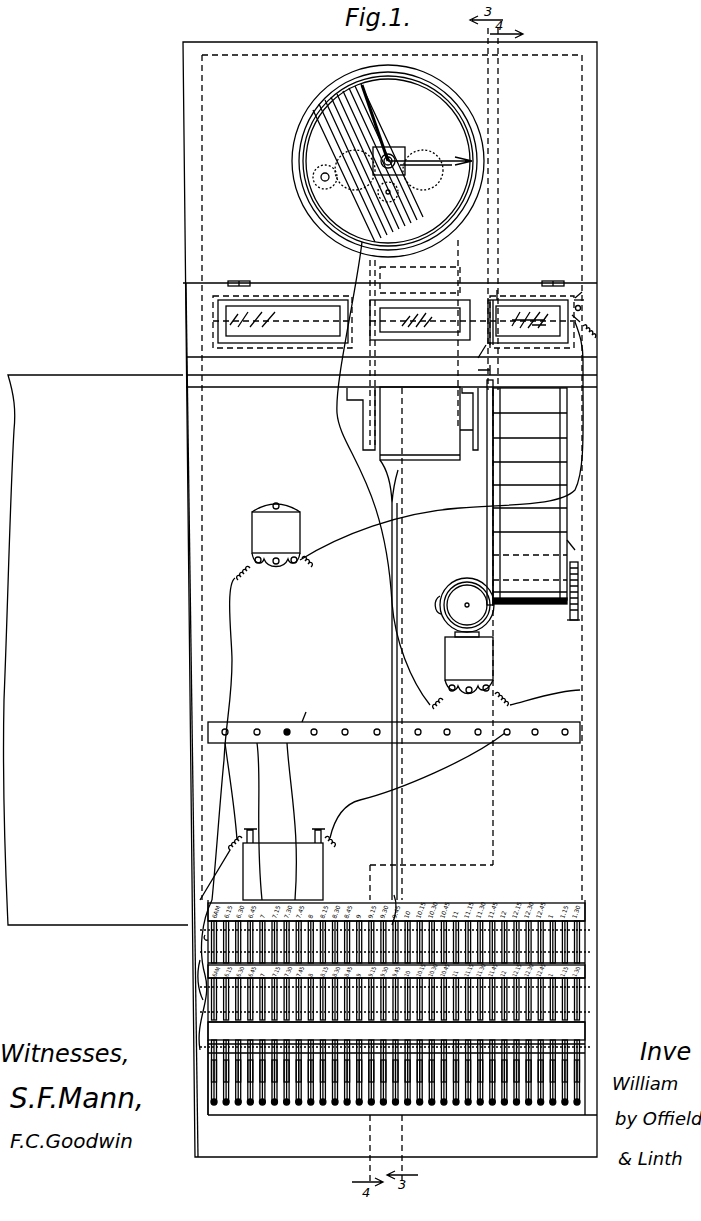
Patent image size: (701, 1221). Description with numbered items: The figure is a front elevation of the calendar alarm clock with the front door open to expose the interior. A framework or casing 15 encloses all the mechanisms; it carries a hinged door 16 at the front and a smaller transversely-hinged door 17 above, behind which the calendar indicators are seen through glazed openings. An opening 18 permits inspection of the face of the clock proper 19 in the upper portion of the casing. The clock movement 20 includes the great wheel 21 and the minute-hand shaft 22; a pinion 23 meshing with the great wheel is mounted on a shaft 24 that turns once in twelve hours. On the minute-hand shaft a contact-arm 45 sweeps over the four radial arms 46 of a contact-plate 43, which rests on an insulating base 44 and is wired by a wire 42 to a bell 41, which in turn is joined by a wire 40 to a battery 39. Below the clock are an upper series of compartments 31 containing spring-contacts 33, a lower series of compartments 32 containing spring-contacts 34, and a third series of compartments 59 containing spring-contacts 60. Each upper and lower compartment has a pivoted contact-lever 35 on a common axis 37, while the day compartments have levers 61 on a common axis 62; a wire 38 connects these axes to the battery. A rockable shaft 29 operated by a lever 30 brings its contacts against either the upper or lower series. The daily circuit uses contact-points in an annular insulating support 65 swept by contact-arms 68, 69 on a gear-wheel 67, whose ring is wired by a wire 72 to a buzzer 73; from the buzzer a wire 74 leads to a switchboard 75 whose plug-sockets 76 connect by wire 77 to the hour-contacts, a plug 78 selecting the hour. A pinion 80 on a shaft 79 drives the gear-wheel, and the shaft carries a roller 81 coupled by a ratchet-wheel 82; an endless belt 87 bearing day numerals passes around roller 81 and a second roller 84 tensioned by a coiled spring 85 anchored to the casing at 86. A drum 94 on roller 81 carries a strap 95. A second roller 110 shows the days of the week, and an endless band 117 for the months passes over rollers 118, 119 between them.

The framework or casing 15 is at (205, 500).
The hinged door 16 is at (95, 650).
The transversely-hinged door 17 is at (597, 312).
The opening 18 is at (457, 138).
The clock proper 19 is at (415, 97).
The clock movement or train 20 is at (390, 199).
The great wheel 21 is at (368, 163).
The minute-hand shaft 22 is at (393, 123).
The pinion 23 is at (321, 178).
The shaft or arbor 24 is at (325, 188).
The shaft or axis 29 is at (592, 952).
The handle or lever 30 is at (404, 899).
The upper series of compartments 31 is at (588, 932).
The lower series of compartments 32 is at (590, 1000).
The spring-contact 33 is at (590, 906).
The spring-contact 34 is at (588, 973).
The pivoted contact-lever 35 is at (585, 917).
The axes 37 is at (205, 935).
The wire 38 is at (196, 978).
The battery 39 is at (267, 864).
The wire 40 is at (428, 765).
The bell 41 is at (490, 663).
The wire 42 is at (381, 558).
The contact-plate 43 is at (355, 170).
The insulating plate or base 44 is at (405, 176).
The contact-arm 45 is at (430, 152).
The radial arms 46 is at (387, 148).
The third series of compartments 59 is at (208, 1071).
The spring-contact 60 is at (588, 1038).
The lever 61 is at (585, 1064).
The common axis 62 is at (592, 1048).
The annular support 65 is at (580, 318).
The gear-wheel 67 is at (598, 272).
The contact-arm 68 is at (584, 302).
The contact-arm 69 is at (582, 309).
The wire 72 is at (430, 510).
The audible signal (buzzer) 73 is at (287, 534).
The wire 74 is at (236, 628).
The switchboard 75 is at (394, 722).
The plug-sockets 76 is at (232, 748).
The wire 77 is at (290, 780).
The plug 78 is at (312, 709).
The shaft 79 is at (478, 312).
The pinion 80 is at (588, 330).
The roller 81 is at (503, 300).
The ratchet-wheel 82 is at (478, 347).
The second roller 84 is at (577, 547).
The coiled spring 85 is at (572, 600).
The spring attachment to casing 86 is at (578, 625).
The endless belt or chain 87 is at (598, 490).
The drum 94 is at (498, 300).
The strap or belt 95 is at (474, 366).
The second roller 110 is at (284, 345).
The endless band 117 is at (384, 460).
The roller 118 is at (455, 280).
The roller 119 is at (463, 435).